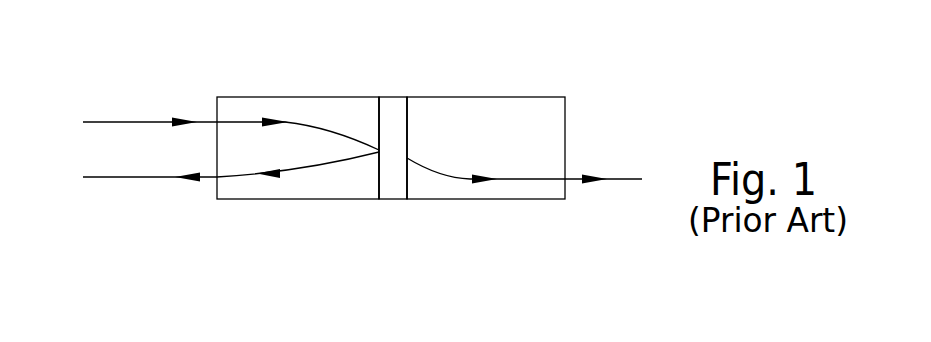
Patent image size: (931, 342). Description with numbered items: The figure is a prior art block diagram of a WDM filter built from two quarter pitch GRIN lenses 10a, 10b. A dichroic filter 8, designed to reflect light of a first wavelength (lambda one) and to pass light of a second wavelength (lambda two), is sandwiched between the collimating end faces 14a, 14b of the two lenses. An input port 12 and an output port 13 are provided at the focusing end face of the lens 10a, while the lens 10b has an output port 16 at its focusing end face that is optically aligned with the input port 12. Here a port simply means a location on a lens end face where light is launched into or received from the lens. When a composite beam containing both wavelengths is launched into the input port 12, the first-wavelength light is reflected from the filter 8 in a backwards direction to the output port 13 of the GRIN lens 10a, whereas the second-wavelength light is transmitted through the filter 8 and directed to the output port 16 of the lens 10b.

The dichroic filter 8 is at (390, 97).
The quarter pitch GRIN lens 10a is at (310, 194).
The quarter pitch GRIN lens 10b is at (428, 192).
The input port 12 is at (217, 121).
The output port 13 is at (216, 178).
The collimating end face 14a is at (378, 107).
The collimating end face 14b is at (408, 110).
The output port 16 is at (567, 188).